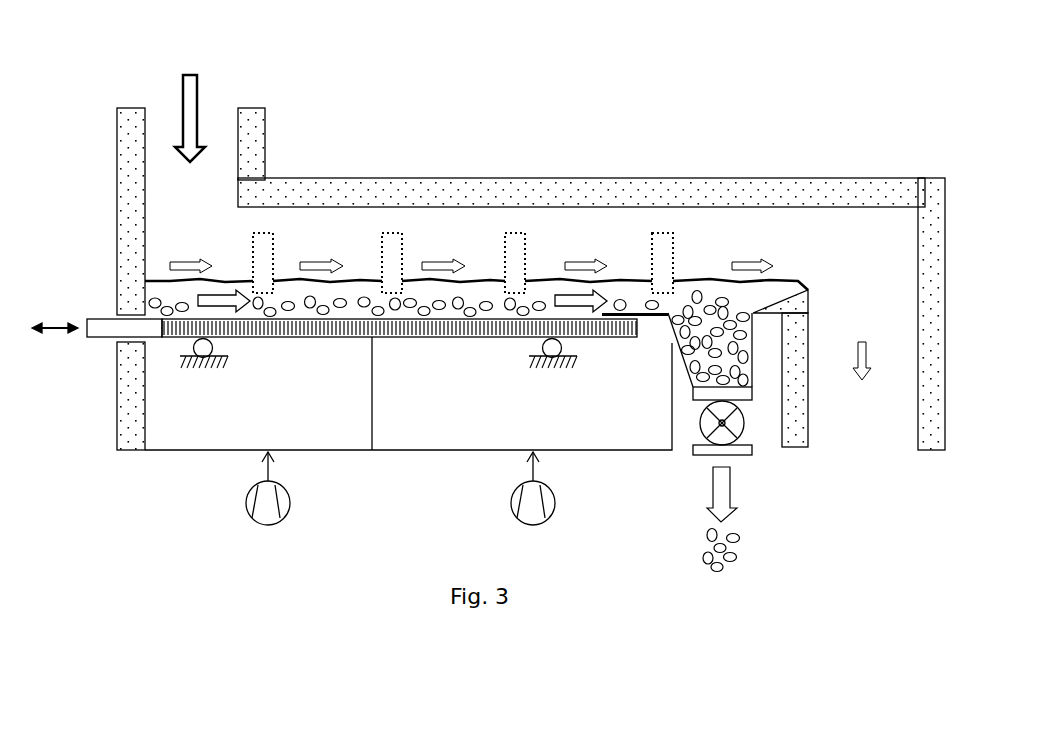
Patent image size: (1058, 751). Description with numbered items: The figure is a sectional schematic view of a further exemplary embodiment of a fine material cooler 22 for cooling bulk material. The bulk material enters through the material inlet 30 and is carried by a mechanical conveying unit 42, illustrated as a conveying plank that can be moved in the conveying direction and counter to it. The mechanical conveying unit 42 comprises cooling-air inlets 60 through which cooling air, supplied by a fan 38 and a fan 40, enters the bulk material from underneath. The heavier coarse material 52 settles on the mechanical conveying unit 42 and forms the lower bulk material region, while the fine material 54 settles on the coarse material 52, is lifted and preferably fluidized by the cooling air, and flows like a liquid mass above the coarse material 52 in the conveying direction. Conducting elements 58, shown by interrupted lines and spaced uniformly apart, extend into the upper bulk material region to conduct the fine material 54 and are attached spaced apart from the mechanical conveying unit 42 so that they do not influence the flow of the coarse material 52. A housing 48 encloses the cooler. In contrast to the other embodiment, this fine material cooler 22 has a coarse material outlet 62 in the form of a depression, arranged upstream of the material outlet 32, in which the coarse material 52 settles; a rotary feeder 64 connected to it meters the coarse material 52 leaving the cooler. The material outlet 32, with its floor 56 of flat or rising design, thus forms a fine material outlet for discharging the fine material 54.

The fine material cooler 22 is at (801, 95).
The material inlet 30 is at (169, 114).
The material outlet 32 is at (865, 432).
The housing 48 is at (621, 191).
The fine material 54 is at (292, 290).
The conducting elements 58 is at (393, 248).
The coarse material 52 is at (270, 312).
The mechanical conveying unit 42 is at (448, 333).
The cooling-air inlets 60 is at (372, 340).
The fan 38 is at (265, 505).
The fan 40 is at (532, 505).
The floor 56 is at (780, 302).
The coarse material outlet 62 is at (743, 479).
The rotary feeder 64 is at (710, 425).